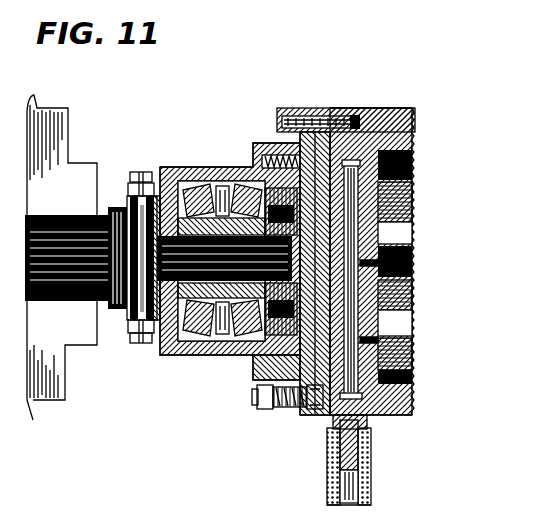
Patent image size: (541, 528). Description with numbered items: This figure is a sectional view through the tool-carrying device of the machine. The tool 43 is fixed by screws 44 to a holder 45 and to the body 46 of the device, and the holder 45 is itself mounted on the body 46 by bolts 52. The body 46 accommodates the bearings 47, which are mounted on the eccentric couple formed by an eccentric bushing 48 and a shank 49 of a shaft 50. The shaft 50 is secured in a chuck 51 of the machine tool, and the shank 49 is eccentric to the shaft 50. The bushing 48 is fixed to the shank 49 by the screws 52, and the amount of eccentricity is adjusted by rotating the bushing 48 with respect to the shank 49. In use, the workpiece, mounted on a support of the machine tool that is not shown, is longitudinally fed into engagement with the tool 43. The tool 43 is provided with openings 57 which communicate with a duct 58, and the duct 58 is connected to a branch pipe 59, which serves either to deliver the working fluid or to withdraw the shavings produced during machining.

The tool 43 is at (400, 110).
The screws 44 is at (349, 108).
The holder 45 is at (300, 108).
The body 46 is at (282, 110).
The bearings 47 is at (233, 168).
The eccentric bushing 48 is at (116, 206).
The shank 49 is at (200, 340).
The shaft 50 is at (98, 302).
The chuck 51 is at (43, 387).
The screws 52 is at (147, 172).
The openings 57 is at (378, 340).
The duct 58 is at (356, 302).
The branch pipe 59 is at (327, 482).